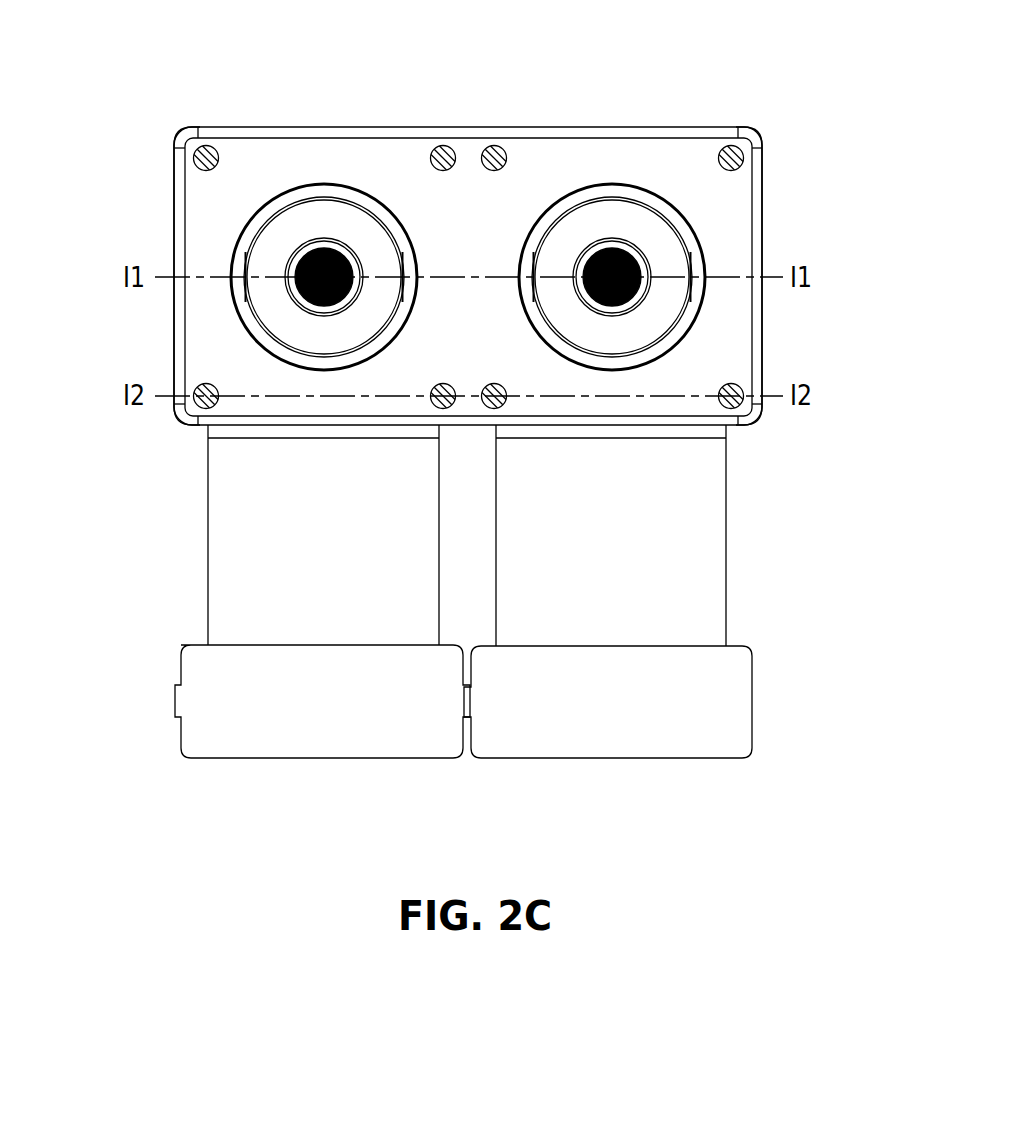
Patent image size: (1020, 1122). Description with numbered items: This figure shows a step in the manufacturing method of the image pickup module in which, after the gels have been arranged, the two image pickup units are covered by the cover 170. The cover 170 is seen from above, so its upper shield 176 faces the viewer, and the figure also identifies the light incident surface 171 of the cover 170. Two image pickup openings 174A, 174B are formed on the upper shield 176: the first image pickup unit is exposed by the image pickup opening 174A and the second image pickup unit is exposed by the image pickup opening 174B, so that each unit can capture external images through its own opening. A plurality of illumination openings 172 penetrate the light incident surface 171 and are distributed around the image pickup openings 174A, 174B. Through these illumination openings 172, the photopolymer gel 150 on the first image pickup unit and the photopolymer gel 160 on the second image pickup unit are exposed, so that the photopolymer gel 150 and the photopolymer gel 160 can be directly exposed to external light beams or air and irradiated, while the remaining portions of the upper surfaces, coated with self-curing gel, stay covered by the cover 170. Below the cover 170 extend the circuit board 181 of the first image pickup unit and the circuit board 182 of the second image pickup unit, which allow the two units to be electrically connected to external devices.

The photopolymer gel 150 is at (193, 158).
The photopolymer gel 160 is at (745, 158).
The cover 170 is at (725, 230).
The light incident surface 171 is at (637, 156).
The upper shield 176 is at (496, 236).
The illumination openings 172 is at (206, 146).
The image pickup opening 174A is at (297, 188).
The image pickup opening 174B is at (585, 188).
The circuit board 181 is at (215, 553).
The circuit board 182 is at (718, 553).